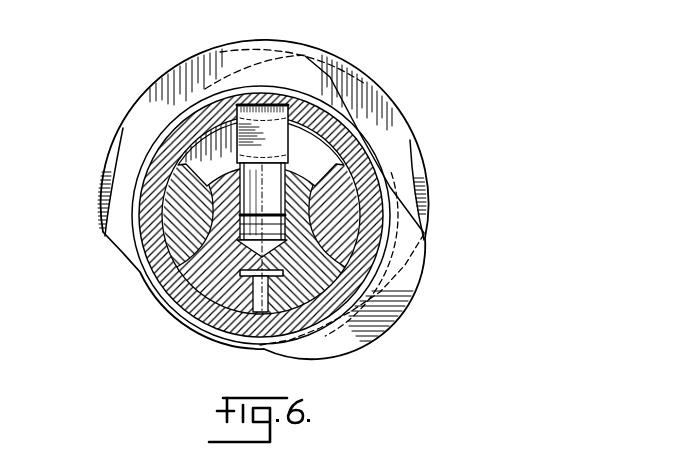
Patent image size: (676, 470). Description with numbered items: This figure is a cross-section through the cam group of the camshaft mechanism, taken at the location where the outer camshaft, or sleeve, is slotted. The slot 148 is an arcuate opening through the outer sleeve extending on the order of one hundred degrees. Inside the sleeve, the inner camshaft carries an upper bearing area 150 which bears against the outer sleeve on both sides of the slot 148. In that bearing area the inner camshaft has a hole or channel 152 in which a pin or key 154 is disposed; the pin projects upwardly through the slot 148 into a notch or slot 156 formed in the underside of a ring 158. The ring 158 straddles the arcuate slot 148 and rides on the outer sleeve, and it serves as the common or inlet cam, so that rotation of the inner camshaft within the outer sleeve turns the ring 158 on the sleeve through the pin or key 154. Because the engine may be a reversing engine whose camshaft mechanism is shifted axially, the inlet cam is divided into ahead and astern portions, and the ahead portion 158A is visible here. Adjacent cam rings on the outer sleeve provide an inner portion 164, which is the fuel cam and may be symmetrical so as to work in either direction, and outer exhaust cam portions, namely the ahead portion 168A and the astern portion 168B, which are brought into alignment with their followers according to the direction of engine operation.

The slot 148 is at (307, 133).
The upper bearing area 150 is at (407, 147).
The hole or channel 152 is at (235, 246).
The pin or key 154 is at (272, 183).
The notch or slot 156 is at (287, 108).
The ring 158 is at (268, 93).
The inlet cam ahead portion 158A is at (413, 267).
The inner portion (fuel cam) 164 is at (418, 150).
The exhaust cam ahead portion 168A is at (423, 183).
The exhaust cam astern portion 168B is at (110, 217).